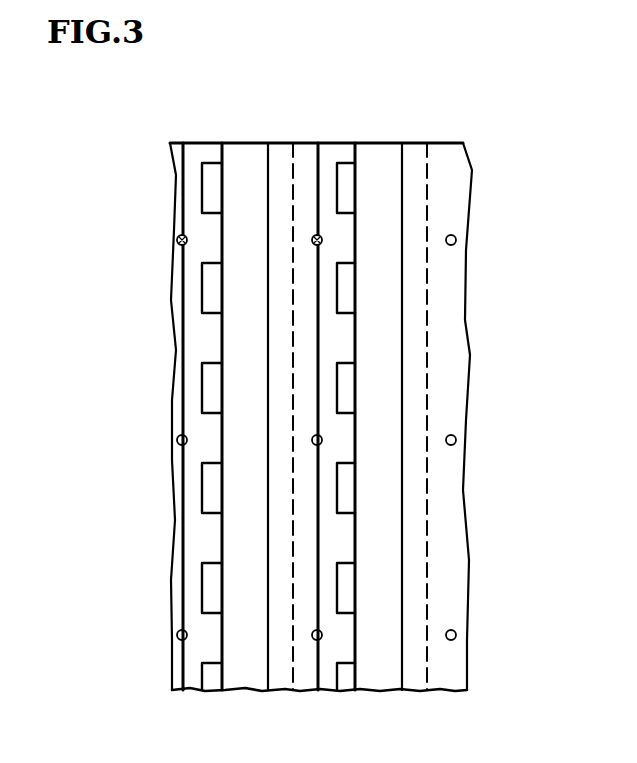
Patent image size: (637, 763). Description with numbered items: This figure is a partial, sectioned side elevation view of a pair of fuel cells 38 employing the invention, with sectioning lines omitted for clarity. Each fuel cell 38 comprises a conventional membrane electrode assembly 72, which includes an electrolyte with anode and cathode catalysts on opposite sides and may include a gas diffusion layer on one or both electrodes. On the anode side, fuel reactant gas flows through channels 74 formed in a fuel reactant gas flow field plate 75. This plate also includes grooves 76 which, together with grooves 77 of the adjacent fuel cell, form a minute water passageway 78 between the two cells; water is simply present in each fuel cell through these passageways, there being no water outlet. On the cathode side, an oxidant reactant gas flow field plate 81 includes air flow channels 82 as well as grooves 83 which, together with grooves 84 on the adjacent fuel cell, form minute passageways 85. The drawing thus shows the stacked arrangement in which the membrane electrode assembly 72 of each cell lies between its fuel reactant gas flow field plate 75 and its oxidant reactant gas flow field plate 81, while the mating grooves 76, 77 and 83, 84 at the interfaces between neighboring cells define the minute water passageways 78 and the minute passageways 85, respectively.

The fuel cell 38 is at (249, 382).
The membrane electrode assembly 72 is at (241, 150).
The channels 74 is at (210, 155).
The fuel reactant gas flow field plate 75 is at (196, 150).
The grooves 76 is at (187, 239).
The grooves 77 is at (177, 241).
The minute water passageway 78 is at (177, 440).
The oxidant reactant gas flow field plate 81 is at (307, 142).
The air flow channels 82 is at (281, 155).
The grooves 83 is at (312, 241).
The grooves 84 is at (322, 239).
The minute passageways 85 is at (322, 439).